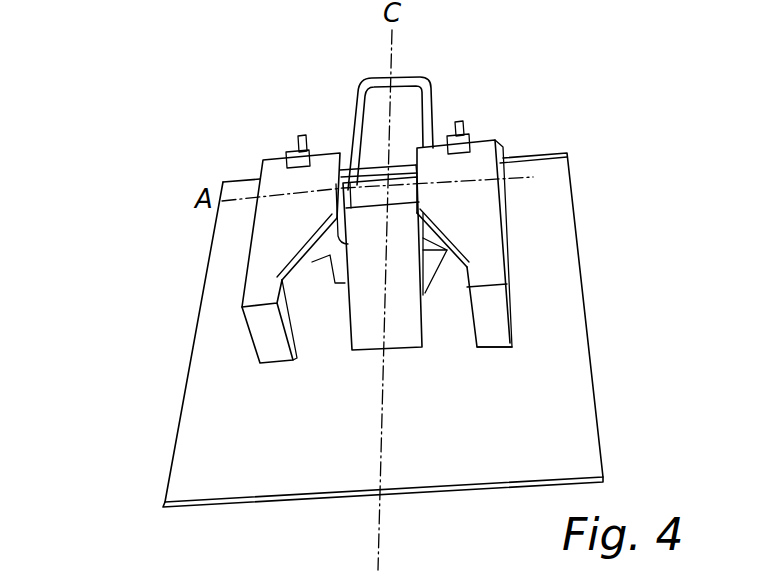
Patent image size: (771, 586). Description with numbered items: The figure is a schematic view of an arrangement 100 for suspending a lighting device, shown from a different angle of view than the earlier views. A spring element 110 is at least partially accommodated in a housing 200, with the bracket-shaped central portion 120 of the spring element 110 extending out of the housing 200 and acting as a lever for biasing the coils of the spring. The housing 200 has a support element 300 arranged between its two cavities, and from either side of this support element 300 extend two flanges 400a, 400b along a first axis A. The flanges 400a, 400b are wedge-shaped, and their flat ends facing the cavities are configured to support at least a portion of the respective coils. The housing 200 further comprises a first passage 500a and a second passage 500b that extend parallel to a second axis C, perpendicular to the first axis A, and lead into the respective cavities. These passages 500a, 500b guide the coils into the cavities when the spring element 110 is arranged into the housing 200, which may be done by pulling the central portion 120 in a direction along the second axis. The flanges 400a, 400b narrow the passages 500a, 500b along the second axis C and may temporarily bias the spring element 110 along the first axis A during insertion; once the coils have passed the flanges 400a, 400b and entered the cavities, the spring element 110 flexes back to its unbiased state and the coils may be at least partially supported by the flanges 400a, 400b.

The arrangement 100 is at (138, 311).
The spring element 110 is at (540, 110).
The central portion 120 is at (430, 93).
The housing 200 is at (498, 150).
The support element 300 is at (402, 304).
The first flange 400a is at (333, 268).
The second flange 400b is at (465, 262).
The first passage 500a is at (317, 333).
The second passage 500b is at (448, 303).